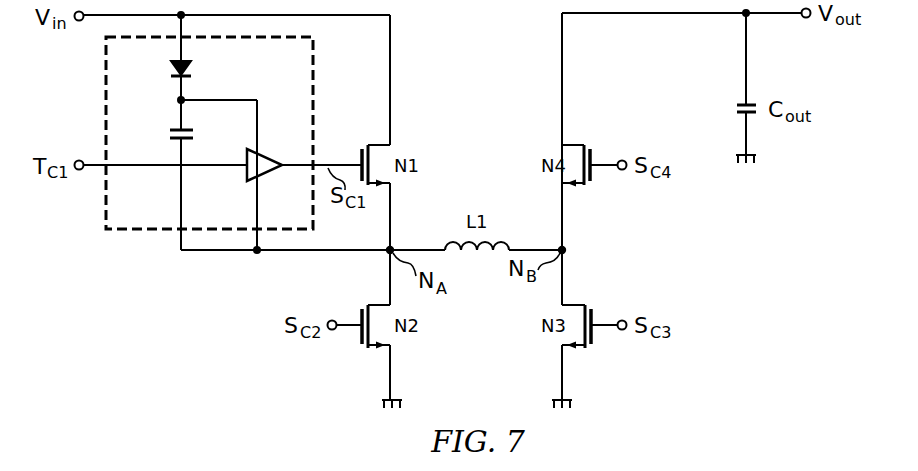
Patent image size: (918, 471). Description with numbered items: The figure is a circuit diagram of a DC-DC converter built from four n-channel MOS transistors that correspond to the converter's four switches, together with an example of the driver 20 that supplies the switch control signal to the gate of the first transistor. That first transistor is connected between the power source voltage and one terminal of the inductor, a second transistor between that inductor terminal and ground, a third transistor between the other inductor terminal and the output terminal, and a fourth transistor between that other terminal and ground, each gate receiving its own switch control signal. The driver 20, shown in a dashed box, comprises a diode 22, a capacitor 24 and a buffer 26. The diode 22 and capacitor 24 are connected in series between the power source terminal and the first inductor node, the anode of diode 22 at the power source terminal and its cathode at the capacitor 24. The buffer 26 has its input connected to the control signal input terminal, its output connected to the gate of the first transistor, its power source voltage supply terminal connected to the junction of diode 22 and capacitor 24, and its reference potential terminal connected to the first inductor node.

The driver 20 is at (150, 231).
The diode 22 is at (194, 70).
The capacitor 24 is at (170, 134).
The buffer 26 is at (262, 154).